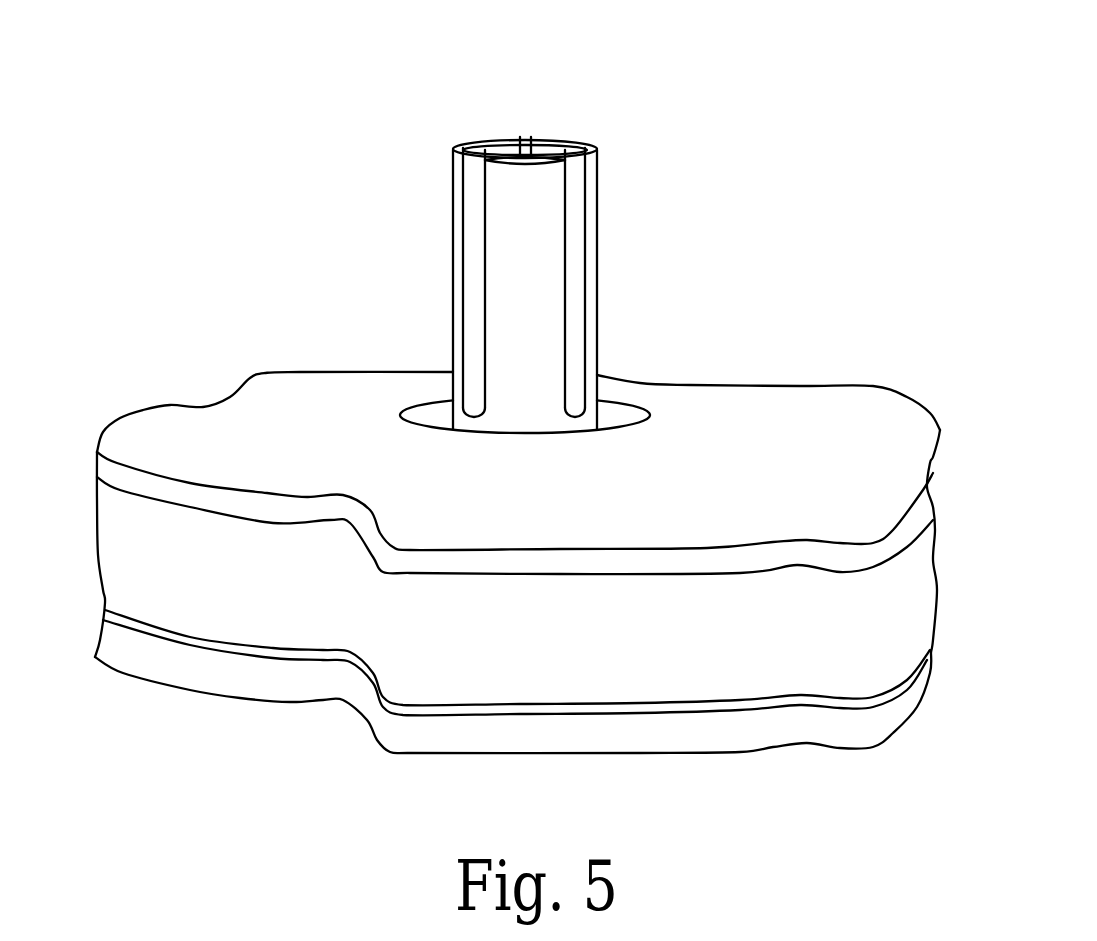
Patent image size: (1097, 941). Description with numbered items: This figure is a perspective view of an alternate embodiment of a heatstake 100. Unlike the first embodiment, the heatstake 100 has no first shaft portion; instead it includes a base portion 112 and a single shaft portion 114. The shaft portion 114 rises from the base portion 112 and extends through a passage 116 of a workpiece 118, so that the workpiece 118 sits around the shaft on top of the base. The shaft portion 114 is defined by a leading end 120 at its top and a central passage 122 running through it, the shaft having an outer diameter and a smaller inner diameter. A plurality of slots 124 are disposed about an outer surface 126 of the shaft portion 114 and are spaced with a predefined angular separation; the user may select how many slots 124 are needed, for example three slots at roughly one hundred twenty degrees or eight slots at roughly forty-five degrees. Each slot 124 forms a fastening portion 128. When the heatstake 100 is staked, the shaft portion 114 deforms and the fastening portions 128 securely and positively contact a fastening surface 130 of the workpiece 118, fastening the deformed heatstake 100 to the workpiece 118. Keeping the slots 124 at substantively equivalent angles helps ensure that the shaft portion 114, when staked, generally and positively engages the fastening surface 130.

The heatstake 100 is at (390, 103).
The base portion 112 is at (183, 668).
The shaft portion 114 is at (500, 127).
The passage 116 is at (618, 415).
The workpiece 118 is at (75, 534).
The leading end 120 is at (460, 145).
The central passage 122 is at (572, 145).
The slots 124 is at (527, 138).
The outer surface 126 is at (530, 230).
The fastening portion 128 is at (517, 262).
The fastening surface 130 is at (822, 402).